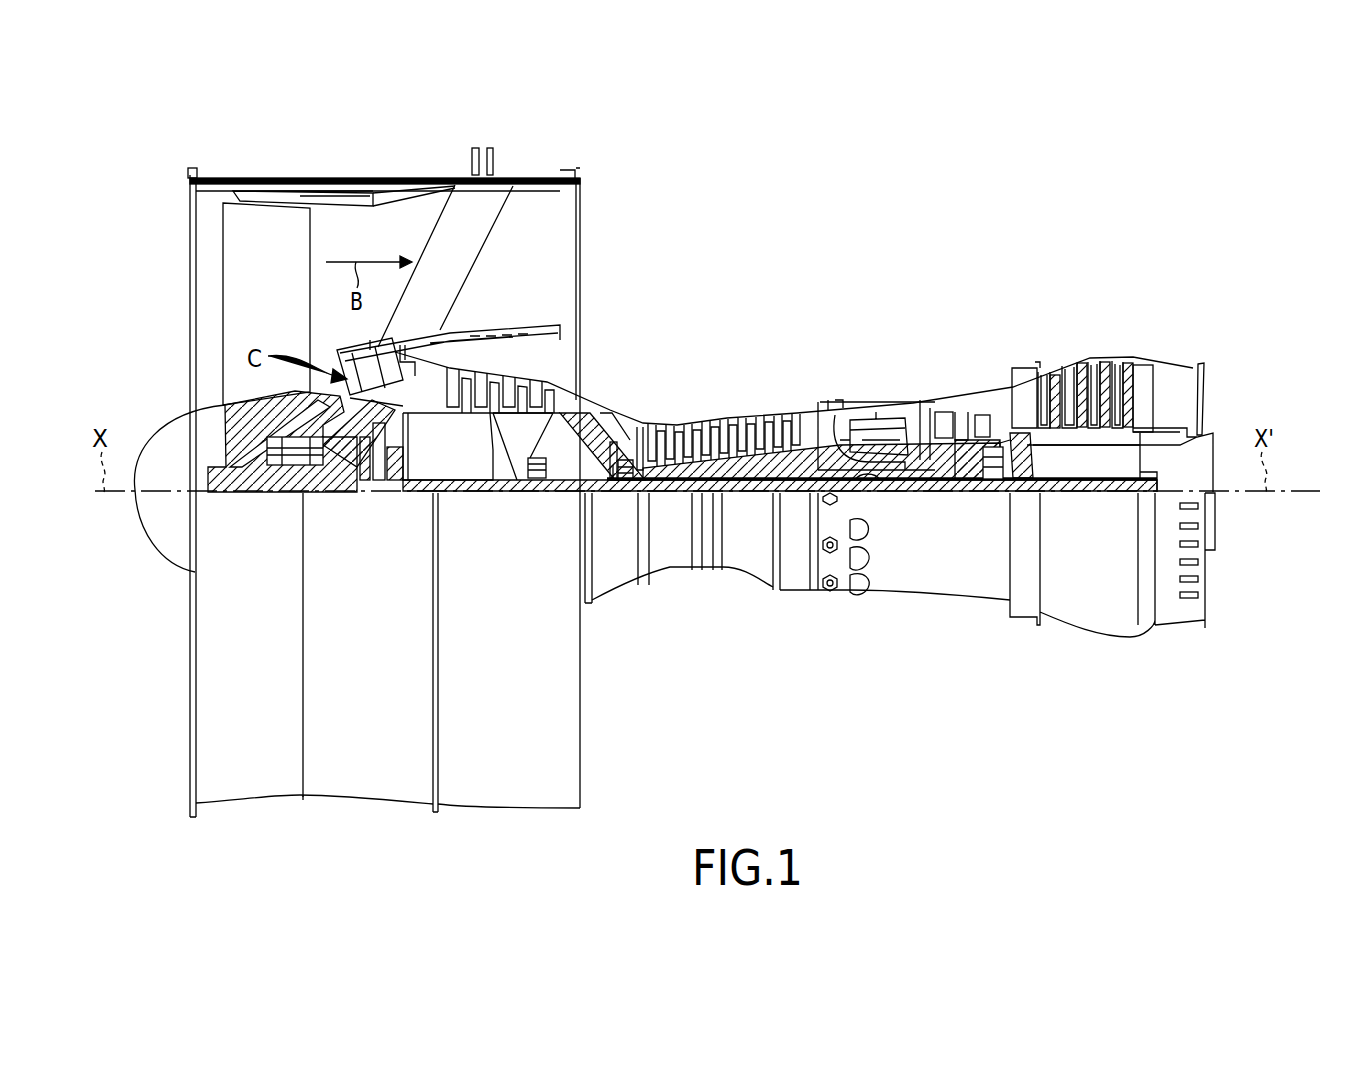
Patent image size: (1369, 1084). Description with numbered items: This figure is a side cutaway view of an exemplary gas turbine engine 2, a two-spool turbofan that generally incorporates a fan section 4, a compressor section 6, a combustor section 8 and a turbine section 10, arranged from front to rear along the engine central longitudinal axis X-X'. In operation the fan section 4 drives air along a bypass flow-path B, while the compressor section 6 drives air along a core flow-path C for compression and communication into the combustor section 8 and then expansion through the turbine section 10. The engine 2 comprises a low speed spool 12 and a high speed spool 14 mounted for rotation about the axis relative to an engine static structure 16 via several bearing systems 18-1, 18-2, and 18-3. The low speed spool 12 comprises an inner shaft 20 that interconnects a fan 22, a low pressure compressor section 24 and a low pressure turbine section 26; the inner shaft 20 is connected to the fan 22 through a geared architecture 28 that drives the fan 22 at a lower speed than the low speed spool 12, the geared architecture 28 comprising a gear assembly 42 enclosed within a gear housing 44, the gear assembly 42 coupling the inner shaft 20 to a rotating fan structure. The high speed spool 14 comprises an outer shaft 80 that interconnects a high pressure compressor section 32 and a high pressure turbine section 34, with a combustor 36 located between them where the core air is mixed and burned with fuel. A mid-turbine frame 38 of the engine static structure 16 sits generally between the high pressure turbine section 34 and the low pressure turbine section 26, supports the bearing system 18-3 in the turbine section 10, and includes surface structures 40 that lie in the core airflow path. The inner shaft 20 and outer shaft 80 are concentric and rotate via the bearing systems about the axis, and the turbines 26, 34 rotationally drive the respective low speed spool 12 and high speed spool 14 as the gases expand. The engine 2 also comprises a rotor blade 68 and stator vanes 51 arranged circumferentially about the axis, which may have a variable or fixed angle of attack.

The gas turbine engine 2 is at (916, 208).
The fan section 4 is at (432, 159).
The compressor section 6 is at (437, 293).
The combustor section 8 is at (927, 293).
The turbine section 10 is at (1145, 293).
The low speed spool 12 is at (747, 508).
The high speed spool 14 is at (795, 462).
The engine static structure 16 is at (365, 780).
The bearing system 18-1 is at (280, 470).
The bearing system 18-2 is at (538, 478).
The bearing system 18-3 is at (990, 482).
The inner shaft 20 is at (605, 492).
The fan 22 is at (278, 309).
The low pressure compressor section 24 is at (512, 388).
The low pressure turbine section 26 is at (1077, 382).
The geared architecture 28 is at (394, 512).
The high pressure compressor section 32 is at (733, 460).
The high pressure turbine section 34 is at (940, 412).
The combustor 36 is at (866, 433).
The mid-turbine frame 38 is at (985, 423).
The surface structures 40 is at (1000, 440).
The gear assembly 42 is at (403, 474).
The gear housing 44 is at (402, 441).
The stator vane 51 is at (668, 432).
The rotor blade 68 is at (962, 423).
The outer shaft 80 is at (870, 478).